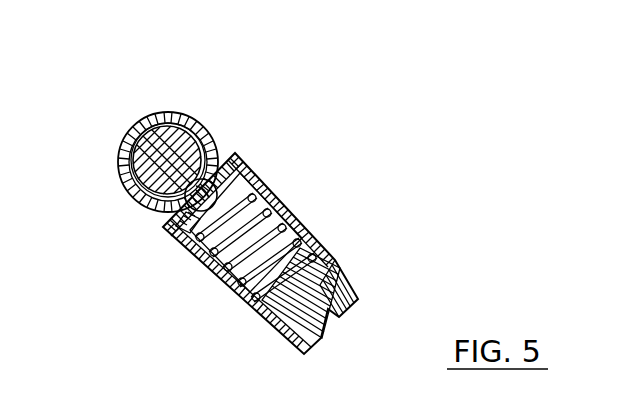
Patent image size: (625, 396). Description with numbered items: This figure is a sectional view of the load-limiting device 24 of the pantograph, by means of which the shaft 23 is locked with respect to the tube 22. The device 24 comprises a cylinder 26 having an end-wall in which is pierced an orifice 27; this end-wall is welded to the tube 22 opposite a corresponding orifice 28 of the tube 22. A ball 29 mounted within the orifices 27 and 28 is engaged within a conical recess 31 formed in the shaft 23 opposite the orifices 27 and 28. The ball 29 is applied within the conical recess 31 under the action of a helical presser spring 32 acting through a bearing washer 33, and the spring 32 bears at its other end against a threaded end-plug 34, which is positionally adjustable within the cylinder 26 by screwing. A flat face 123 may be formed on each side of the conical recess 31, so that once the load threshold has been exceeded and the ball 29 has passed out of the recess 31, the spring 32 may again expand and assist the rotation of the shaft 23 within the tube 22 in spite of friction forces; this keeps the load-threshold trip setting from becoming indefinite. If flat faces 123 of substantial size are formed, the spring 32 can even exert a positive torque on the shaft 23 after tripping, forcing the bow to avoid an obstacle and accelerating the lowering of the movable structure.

The tube 22 is at (118, 157).
The flat face 123 is at (153, 109).
The shaft 23 is at (188, 160).
The orifice 28 is at (208, 181).
The bearing washer 33 is at (257, 175).
The helical presser spring 32 is at (270, 237).
The threaded end-plug 34 is at (350, 282).
The conical recess 31 is at (156, 204).
The ball 29 is at (167, 233).
The orifice 27 is at (190, 240).
The load-limiting device 24 is at (193, 278).
The cylinder 26 is at (227, 293).